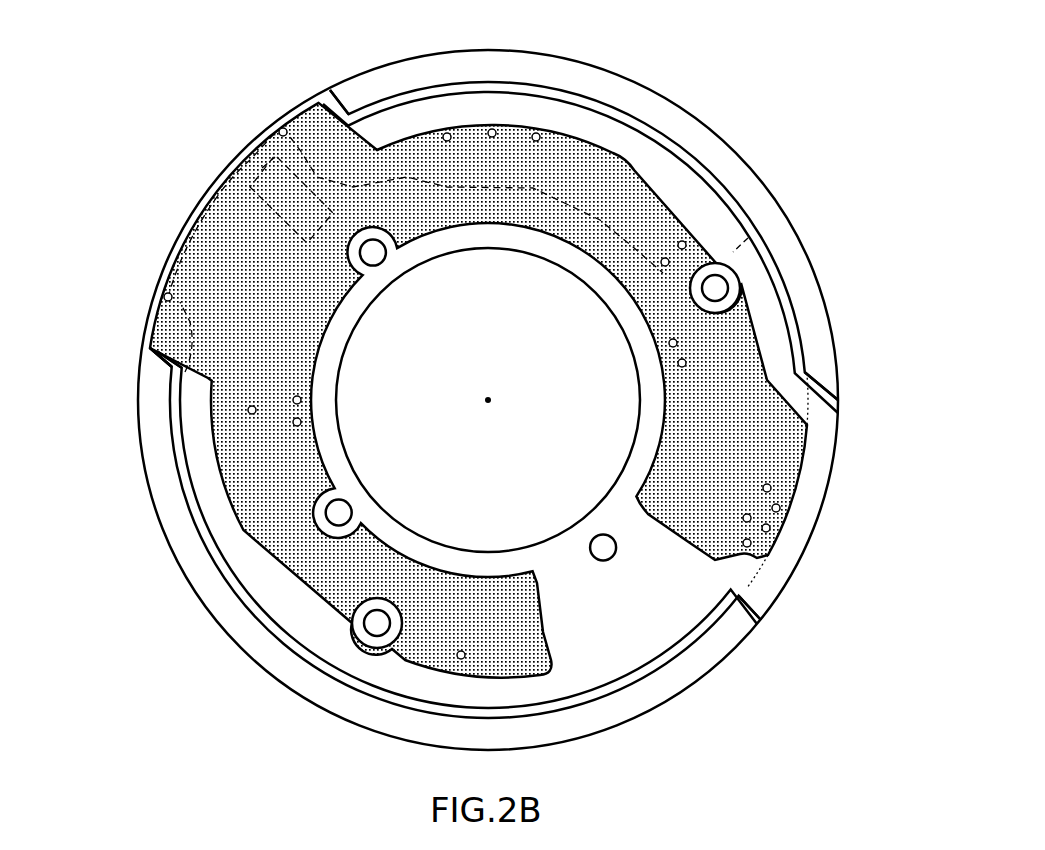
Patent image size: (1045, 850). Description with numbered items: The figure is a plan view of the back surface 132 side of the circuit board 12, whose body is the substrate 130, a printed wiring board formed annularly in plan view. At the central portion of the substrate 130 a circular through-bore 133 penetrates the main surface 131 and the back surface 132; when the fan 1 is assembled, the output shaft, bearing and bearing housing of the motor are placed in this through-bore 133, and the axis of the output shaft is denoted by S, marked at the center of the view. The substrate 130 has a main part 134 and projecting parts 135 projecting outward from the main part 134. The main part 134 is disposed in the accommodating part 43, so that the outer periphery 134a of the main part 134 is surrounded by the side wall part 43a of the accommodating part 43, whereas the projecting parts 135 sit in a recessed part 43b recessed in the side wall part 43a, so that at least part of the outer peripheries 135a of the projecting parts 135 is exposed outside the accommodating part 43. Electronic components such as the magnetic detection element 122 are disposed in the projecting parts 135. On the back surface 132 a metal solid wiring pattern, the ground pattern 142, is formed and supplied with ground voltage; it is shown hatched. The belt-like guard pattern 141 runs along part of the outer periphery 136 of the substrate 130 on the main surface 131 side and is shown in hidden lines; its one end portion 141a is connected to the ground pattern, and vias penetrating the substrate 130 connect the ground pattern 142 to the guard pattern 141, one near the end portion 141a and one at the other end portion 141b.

The fan 1 is at (480, 380).
The circuit board 12 is at (616, 358).
The substrate 130 is at (356, 383).
The accommodating part 43 is at (648, 80).
The side wall part 43a is at (612, 86).
The recessed part 43b is at (146, 351).
The magnetic detection element 122 is at (262, 168).
The main surface 131 is at (748, 238).
The back surface 132 is at (775, 326).
The through-bore 133 is at (543, 537).
The main part 134 is at (532, 108).
The outer periphery of the main part 134a is at (597, 107).
The projecting part 135 is at (283, 130).
The outer periphery of the projecting part 135a is at (107, 319).
The outer periphery of the substrate 136 is at (172, 302).
The guard pattern 141 is at (183, 257).
The one end portion of the guard pattern 141a is at (377, 173).
The other end portion of the guard pattern 141b is at (185, 372).
The ground pattern 142 is at (600, 160).
The axis S is at (491, 400).